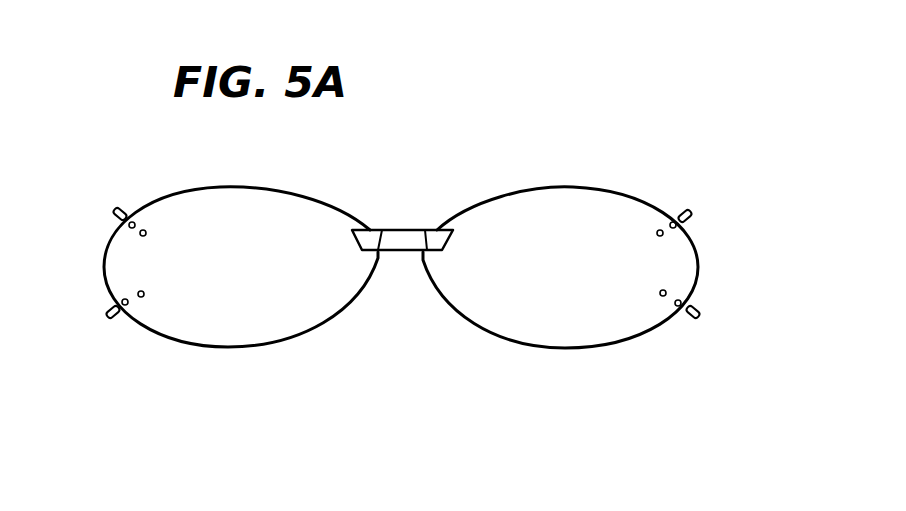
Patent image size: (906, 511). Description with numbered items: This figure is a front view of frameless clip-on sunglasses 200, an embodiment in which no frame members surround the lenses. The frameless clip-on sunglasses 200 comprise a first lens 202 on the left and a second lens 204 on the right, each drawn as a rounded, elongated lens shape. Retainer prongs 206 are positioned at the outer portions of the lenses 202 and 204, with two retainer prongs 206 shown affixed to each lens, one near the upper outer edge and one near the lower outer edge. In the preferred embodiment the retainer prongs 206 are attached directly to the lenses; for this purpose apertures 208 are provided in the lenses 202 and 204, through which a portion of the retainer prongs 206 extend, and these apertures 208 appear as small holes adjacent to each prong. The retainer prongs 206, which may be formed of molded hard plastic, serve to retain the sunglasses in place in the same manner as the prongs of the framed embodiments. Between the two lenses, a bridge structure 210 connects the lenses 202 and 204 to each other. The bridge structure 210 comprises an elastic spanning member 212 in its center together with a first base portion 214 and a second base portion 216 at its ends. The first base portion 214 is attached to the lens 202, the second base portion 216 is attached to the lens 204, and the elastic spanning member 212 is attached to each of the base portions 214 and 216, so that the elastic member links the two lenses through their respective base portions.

The frameless clip-on sunglasses 200 is at (682, 128).
The first lens 202 is at (270, 307).
The second lens 204 is at (571, 316).
The retainer prongs 206 is at (116, 209).
The apertures 208 is at (146, 231).
The bridge structure 210 is at (417, 192).
The elastic spanning member 212 is at (406, 251).
The first base portion 214 is at (362, 250).
The second base portion 216 is at (443, 250).